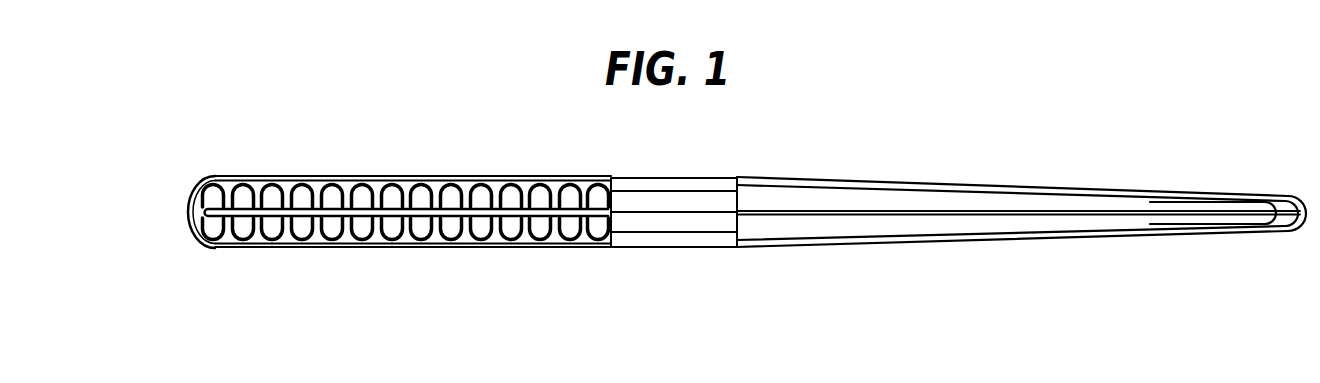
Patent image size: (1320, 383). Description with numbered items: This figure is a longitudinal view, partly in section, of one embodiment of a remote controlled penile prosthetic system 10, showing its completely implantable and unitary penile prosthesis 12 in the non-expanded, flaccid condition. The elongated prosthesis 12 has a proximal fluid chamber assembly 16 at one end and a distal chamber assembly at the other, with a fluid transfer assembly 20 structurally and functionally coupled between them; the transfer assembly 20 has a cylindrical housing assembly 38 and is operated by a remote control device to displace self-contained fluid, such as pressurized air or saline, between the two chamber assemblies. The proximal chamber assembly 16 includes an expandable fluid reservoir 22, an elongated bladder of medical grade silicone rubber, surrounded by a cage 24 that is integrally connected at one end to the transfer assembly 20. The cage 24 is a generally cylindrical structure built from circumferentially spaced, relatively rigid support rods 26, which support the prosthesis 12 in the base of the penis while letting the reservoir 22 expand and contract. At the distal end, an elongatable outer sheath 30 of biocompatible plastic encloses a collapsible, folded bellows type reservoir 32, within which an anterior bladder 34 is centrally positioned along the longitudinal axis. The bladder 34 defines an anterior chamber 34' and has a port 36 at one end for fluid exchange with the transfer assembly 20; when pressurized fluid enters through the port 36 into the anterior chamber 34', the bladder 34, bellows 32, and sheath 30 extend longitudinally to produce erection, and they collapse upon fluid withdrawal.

The remote controlled penile prosthetic system 10 is at (221, 98).
The penile prosthesis 12 is at (270, 255).
The proximal fluid chamber assembly 16 is at (1061, 169).
The fluid transfer assembly 20 is at (671, 186).
The expandable fluid reservoir 22 is at (862, 192).
The cage 24 is at (1068, 222).
The support rods 26 is at (1196, 230).
The outer sheath 30 is at (256, 177).
The bellows type reservoir 32 is at (320, 211).
The anterior bladder 34 is at (392, 261).
The anterior chamber 34' is at (392, 167).
The port 36 is at (595, 194).
The cylindrical housing assembly 38 is at (712, 242).